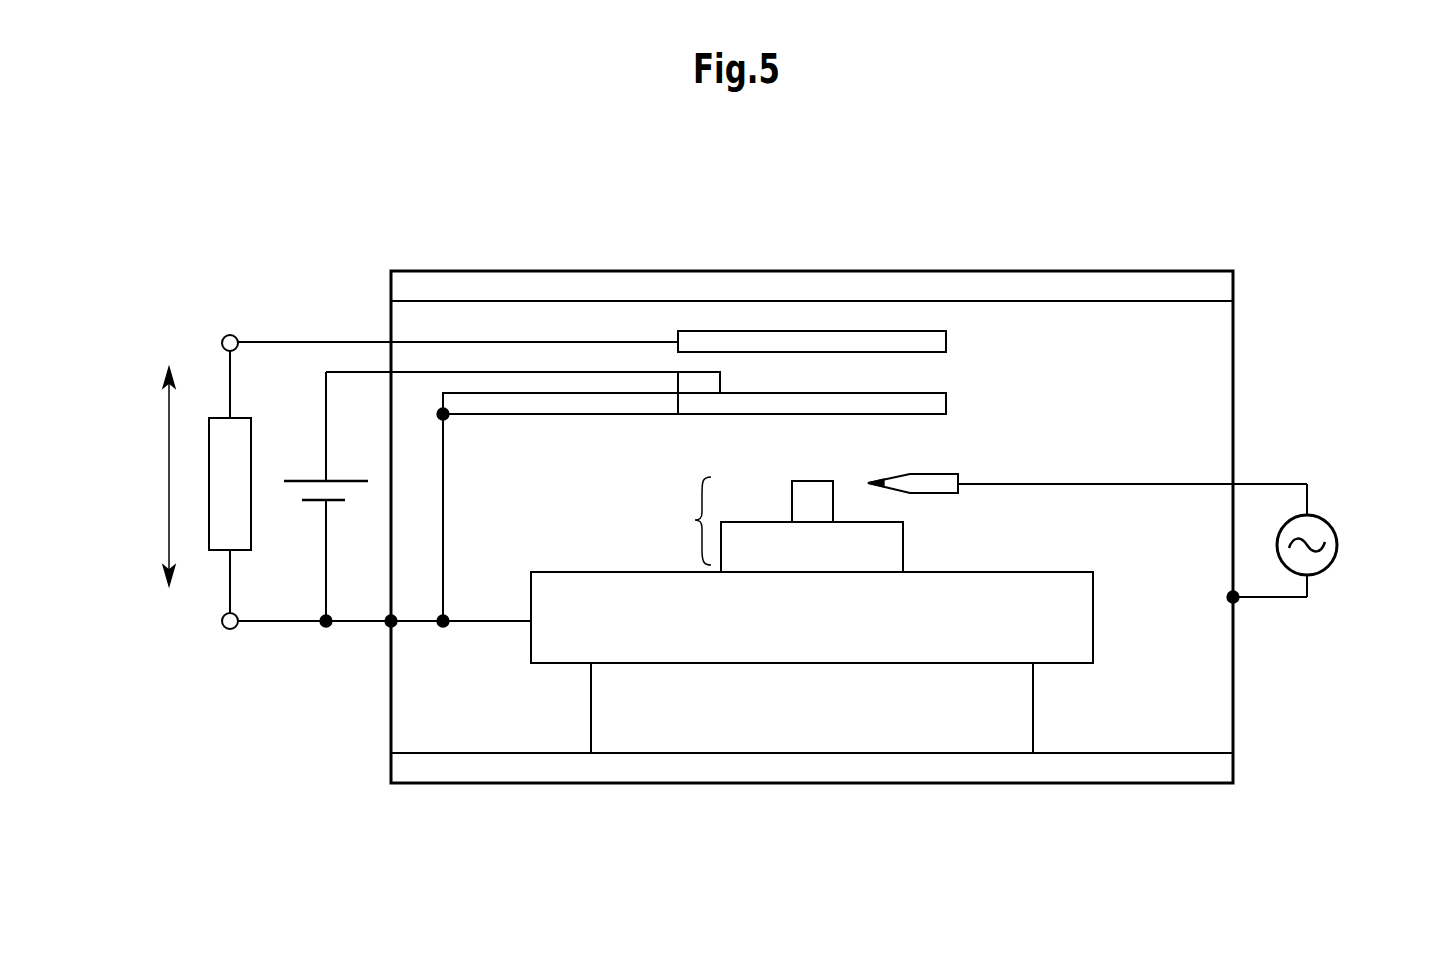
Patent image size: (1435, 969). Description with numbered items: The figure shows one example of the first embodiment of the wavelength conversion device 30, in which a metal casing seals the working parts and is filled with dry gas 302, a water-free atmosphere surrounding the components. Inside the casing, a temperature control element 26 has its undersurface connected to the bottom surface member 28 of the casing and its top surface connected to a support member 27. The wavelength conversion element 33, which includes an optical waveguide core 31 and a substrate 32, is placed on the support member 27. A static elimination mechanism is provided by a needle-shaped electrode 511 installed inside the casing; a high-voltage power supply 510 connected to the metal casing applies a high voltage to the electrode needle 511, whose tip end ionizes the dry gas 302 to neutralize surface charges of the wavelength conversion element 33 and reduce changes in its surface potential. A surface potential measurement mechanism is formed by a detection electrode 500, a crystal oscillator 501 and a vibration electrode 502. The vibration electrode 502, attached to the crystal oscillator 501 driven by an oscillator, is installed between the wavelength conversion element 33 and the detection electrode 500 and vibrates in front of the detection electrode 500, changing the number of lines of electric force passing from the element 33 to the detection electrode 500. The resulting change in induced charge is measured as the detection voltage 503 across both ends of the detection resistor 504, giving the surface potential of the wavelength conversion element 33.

The wavelength conversion device 30 is at (1335, 250).
The dry gas 302 is at (1213, 338).
The bottom surface member 28 is at (818, 785).
The detection electrode 500 is at (948, 343).
The crystal oscillator 501 is at (721, 382).
The vibration electrode 502 is at (948, 405).
The optical waveguide core 31 is at (809, 480).
The substrate 32 is at (905, 545).
The wavelength conversion element 33 is at (684, 521).
The needle-shaped electrode 511 is at (940, 474).
The high-voltage power supply 510 is at (1339, 545).
The support member 27 is at (1095, 615).
The temperature control element 26 is at (1035, 703).
The detection resistor 504 is at (217, 417).
The detection voltage 503 is at (144, 490).